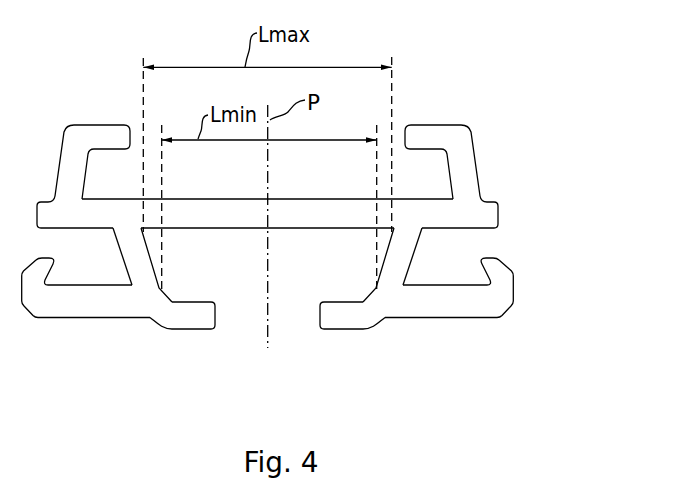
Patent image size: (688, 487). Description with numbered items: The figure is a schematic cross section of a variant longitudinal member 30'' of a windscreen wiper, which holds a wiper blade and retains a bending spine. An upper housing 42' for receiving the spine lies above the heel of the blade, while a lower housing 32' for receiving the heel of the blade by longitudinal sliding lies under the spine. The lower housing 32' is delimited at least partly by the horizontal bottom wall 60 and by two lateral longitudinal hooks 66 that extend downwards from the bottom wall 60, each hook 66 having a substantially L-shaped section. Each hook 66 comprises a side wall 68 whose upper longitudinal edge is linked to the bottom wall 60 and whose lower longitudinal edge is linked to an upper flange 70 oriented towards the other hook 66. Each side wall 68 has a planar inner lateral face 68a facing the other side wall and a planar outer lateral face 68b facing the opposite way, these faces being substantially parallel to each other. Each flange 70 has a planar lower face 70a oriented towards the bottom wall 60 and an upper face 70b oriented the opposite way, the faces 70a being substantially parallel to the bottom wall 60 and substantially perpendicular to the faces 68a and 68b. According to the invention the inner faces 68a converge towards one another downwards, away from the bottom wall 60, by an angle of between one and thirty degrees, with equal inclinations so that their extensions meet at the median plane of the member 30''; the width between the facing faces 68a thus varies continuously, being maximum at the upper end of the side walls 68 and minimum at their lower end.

The longitudinal member 30'' is at (346, 143).
The bottom wall 60 is at (333, 210).
The lateral longitudinal hook 66 is at (141, 339).
The side wall 68 is at (313, 312).
The inner lateral face 68a is at (150, 258).
The outer lateral face 68b is at (123, 262).
The upper flange 70 is at (270, 349).
The lower face 70a is at (195, 300).
The upper face 70b is at (182, 332).
The upper housing 42' is at (205, 180).
The lower housing 32' is at (298, 278).